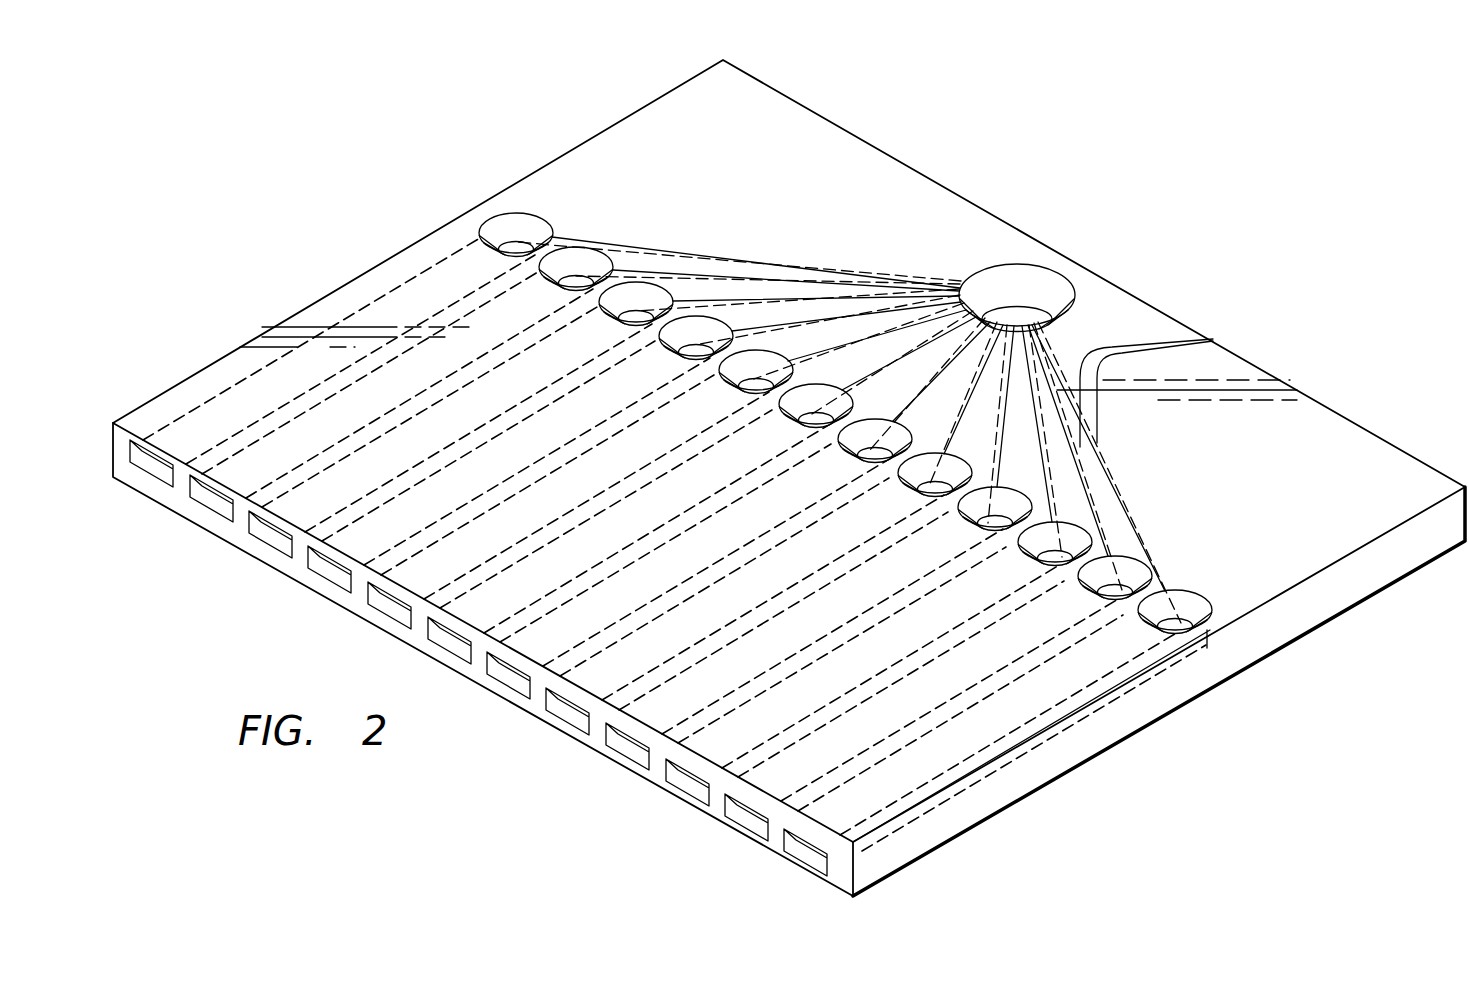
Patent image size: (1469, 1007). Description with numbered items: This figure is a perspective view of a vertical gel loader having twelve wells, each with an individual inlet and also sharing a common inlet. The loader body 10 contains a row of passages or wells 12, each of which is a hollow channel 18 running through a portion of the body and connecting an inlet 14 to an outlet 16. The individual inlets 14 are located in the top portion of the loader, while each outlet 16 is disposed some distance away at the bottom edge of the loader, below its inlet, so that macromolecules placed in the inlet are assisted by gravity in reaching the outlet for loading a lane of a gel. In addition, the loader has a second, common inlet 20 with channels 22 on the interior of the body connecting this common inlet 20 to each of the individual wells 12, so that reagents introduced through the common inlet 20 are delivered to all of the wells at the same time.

The body 10 is at (1087, 141).
The passage 12 is at (380, 297).
The inlet 14 is at (517, 220).
The outlet 16 is at (807, 840).
The hollow channel 18 is at (1060, 692).
The common inlet 20 is at (1017, 293).
The channels 22 is at (1213, 339).